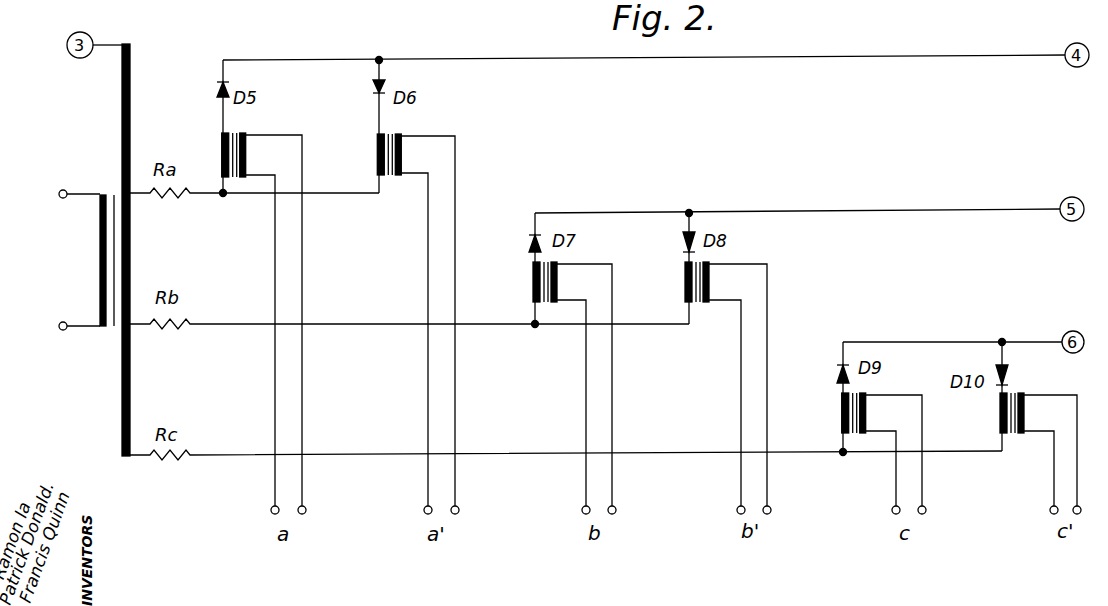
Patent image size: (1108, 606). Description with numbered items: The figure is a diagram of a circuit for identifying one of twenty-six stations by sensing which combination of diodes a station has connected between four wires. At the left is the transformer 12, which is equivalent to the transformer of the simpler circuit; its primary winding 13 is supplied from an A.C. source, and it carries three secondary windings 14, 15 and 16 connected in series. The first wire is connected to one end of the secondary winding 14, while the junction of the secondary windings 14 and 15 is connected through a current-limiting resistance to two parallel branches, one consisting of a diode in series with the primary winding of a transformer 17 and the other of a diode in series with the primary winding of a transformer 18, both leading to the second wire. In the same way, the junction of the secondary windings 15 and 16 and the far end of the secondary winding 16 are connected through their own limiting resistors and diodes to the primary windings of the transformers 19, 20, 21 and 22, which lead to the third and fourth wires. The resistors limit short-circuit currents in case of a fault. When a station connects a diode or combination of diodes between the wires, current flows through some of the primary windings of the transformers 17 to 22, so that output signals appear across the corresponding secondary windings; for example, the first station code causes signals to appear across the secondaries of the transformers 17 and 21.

The transformer 12 is at (112, 250).
The primary winding 13 is at (98, 263).
The secondary winding 14 is at (130, 127).
The secondary winding 15 is at (130, 262).
The secondary winding 16 is at (130, 383).
The transformer 17 is at (245, 129).
The transformer 18 is at (403, 128).
The transformer 19 is at (536, 257).
The transformer 20 is at (689, 259).
The transformer 21 is at (871, 393).
The transformer 22 is at (1037, 390).